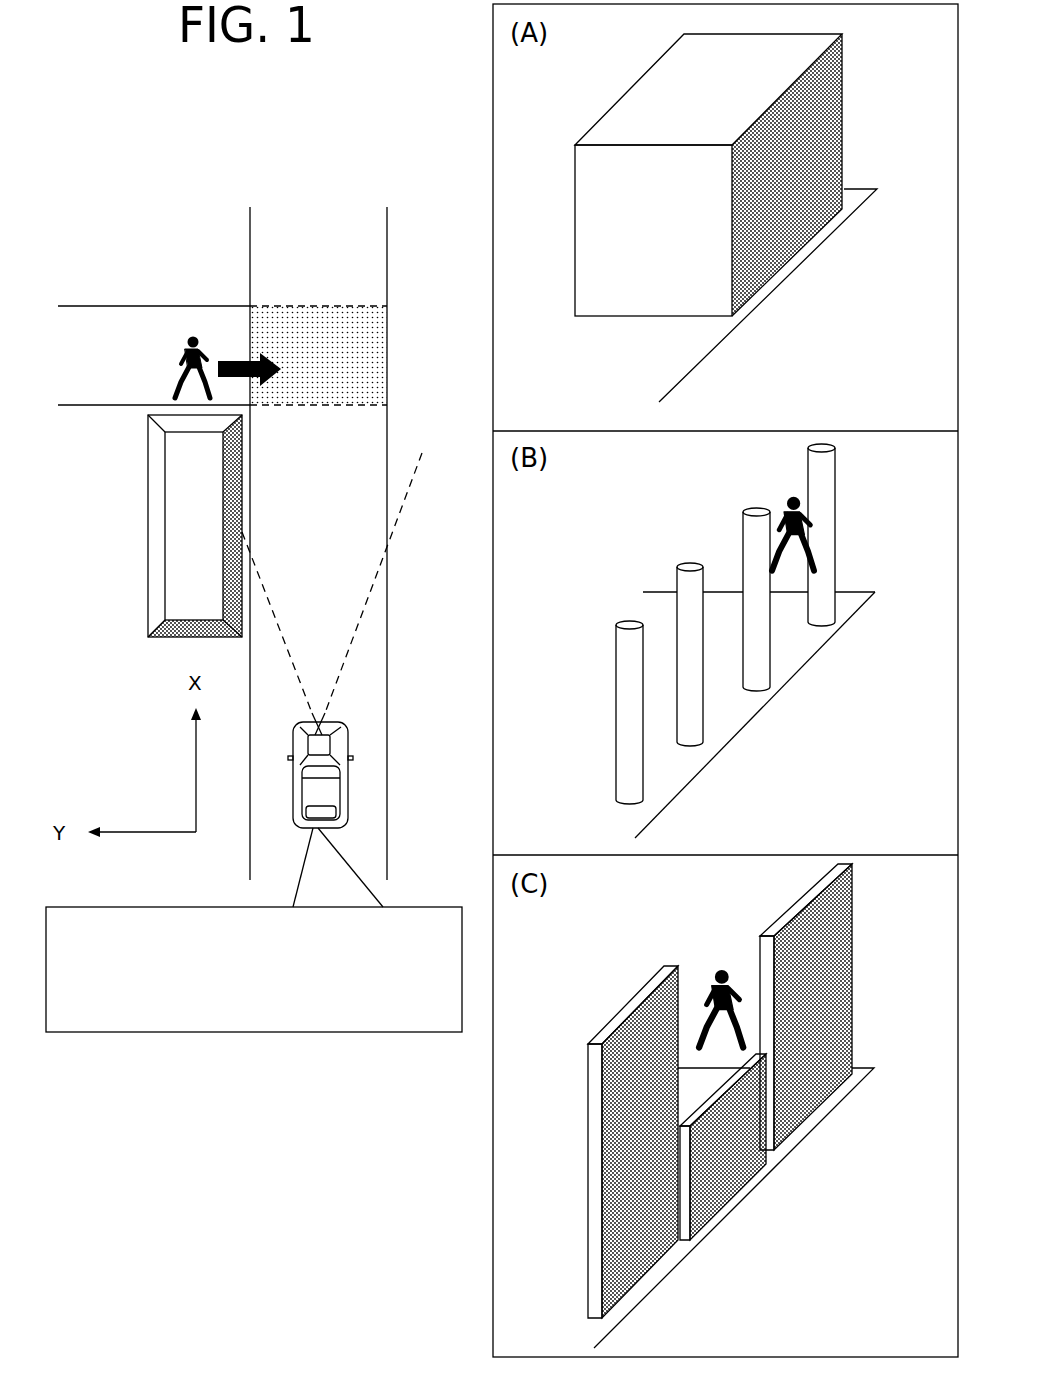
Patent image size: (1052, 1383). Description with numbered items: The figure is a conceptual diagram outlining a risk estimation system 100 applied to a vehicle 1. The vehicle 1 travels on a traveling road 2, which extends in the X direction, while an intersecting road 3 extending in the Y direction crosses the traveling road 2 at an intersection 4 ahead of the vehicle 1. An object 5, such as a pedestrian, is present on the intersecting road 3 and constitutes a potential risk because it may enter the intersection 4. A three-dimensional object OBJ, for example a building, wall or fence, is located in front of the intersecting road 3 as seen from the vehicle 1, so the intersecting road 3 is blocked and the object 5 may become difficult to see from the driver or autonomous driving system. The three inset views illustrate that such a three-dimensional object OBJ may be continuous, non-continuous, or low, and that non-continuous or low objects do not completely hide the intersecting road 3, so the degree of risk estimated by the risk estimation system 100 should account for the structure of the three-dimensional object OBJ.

The vehicle 1 is at (348, 775).
The traveling road 2 is at (326, 520).
The intersecting road 3 is at (111, 372).
The intersection 4 is at (313, 338).
The object 5 is at (178, 344).
The three-dimensional object OBJ is at (173, 522).
The risk estimation system 100 is at (254, 930).